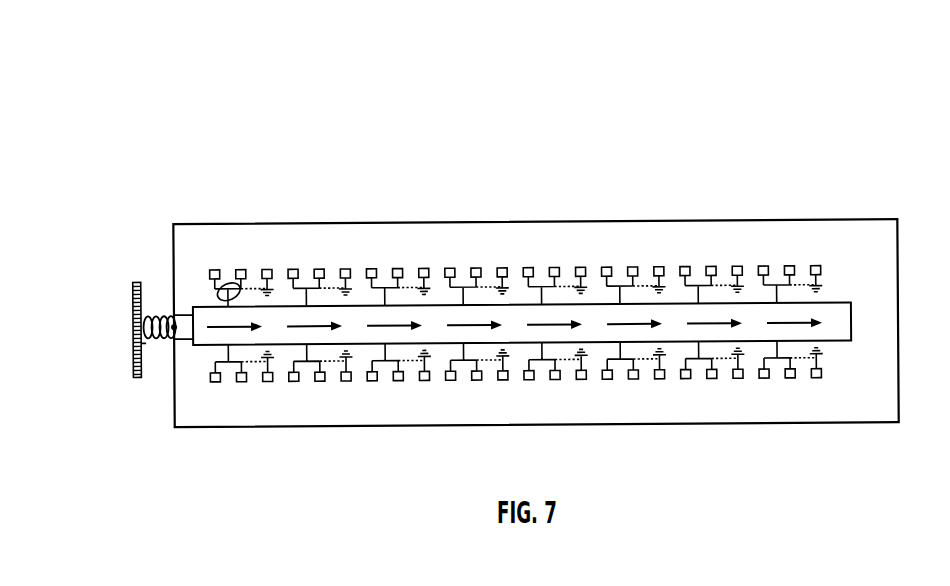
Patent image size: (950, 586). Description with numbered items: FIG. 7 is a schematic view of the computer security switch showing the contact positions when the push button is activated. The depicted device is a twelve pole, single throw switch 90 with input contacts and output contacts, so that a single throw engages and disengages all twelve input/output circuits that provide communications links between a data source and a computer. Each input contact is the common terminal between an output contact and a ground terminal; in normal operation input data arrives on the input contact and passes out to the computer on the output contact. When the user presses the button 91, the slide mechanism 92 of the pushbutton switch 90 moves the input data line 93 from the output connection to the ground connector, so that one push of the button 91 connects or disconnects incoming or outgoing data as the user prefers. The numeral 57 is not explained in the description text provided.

The input/output pad array 57 is at (410, 118).
The twelve pole, single throw switch 90 is at (208, 430).
The button 91 is at (135, 281).
The slide mechanism 92 is at (233, 328).
The input data line 93 is at (225, 307).